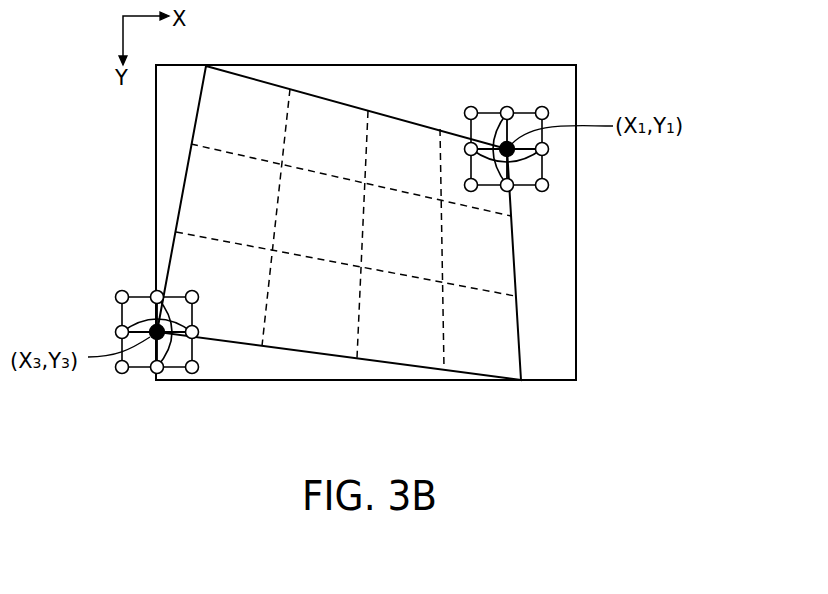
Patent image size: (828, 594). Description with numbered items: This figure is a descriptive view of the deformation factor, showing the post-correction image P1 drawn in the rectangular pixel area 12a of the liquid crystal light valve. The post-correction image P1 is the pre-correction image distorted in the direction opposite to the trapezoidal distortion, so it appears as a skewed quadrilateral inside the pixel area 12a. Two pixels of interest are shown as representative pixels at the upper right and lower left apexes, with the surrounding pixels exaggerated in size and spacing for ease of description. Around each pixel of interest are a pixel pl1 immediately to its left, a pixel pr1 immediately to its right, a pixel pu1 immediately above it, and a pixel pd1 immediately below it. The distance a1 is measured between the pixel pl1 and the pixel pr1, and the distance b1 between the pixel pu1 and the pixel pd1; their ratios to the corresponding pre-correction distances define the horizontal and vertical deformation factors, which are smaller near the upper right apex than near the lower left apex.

The pixel area 12a is at (392, 45).
The post-correction image P1 is at (571, 232).
The inter-pixel distance a1 is at (524, 161).
The inter-pixel distance b1 is at (492, 128).
The pixel immediately above the pixel of interest pu1 is at (507, 128).
The pixel immediately below the pixel of interest pd1 is at (510, 189).
The pixel immediately to the left of the pixel of interest pl1 is at (478, 149).
The pixel immediately to the right of the pixel of interest pr1 is at (532, 150).